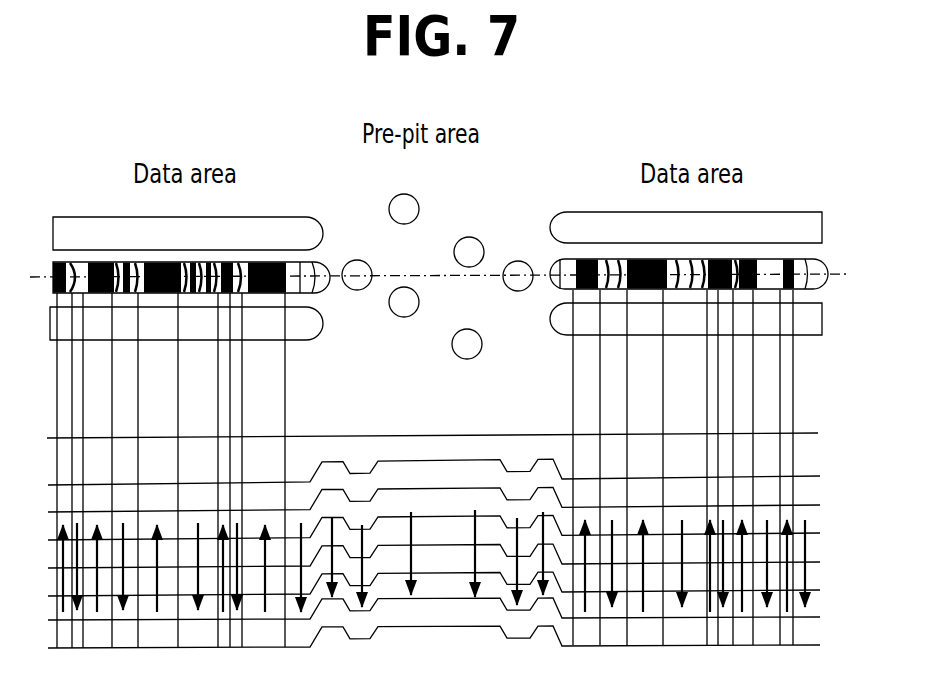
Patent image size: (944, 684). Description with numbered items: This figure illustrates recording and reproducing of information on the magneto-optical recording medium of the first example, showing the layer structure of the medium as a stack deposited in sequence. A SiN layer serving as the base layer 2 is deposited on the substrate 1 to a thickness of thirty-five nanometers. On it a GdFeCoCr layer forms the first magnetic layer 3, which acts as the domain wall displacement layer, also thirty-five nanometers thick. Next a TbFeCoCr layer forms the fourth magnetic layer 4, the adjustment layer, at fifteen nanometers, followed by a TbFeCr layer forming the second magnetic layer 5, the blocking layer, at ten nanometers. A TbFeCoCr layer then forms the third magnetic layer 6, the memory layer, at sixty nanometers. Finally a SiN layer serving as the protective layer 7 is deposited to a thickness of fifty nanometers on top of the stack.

The substrate 1 is at (805, 462).
The base layer 2 is at (805, 495).
The first magnetic layer 3 is at (810, 523).
The fourth magnetic layer 4 is at (810, 548).
The second magnetic layer 5 is at (810, 577).
The third magnetic layer 6 is at (810, 603).
The protective layer 7 is at (810, 632).